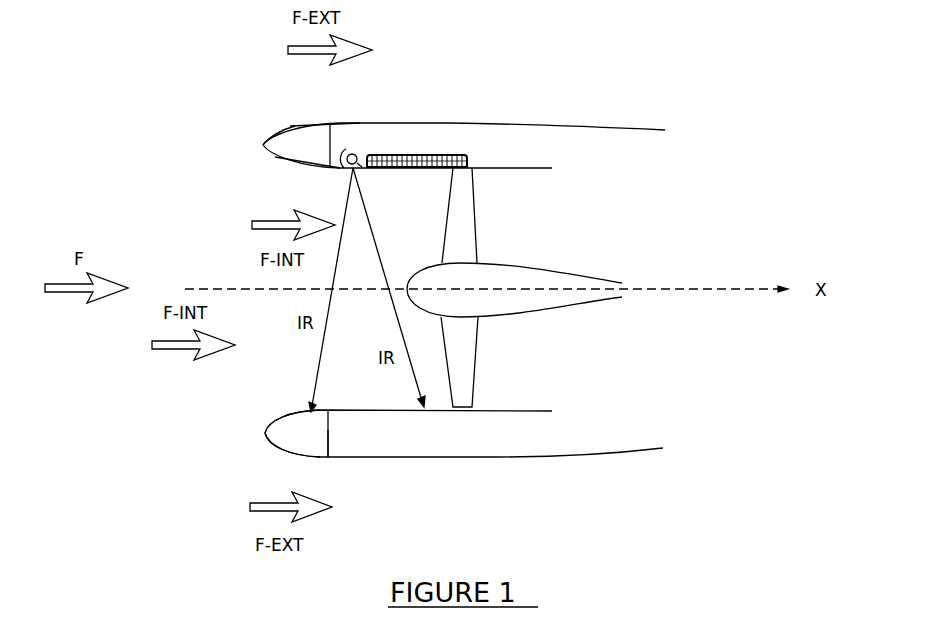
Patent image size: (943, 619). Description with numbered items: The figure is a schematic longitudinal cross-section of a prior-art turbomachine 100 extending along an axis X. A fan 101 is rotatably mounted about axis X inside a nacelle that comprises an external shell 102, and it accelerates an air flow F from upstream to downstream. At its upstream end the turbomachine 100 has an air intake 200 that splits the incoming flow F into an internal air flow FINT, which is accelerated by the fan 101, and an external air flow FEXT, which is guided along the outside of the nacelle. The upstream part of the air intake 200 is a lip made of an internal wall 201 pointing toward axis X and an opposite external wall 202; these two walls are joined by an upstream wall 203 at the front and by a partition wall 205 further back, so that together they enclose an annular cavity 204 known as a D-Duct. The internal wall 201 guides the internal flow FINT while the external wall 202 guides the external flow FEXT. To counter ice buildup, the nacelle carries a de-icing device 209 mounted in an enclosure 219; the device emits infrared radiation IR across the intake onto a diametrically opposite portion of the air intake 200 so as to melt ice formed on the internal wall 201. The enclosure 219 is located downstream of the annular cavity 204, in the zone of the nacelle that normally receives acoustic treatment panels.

The turbomachine 100 is at (686, 189).
The fan 101 is at (425, 271).
The external shell 102 is at (383, 168).
The air intake 200 is at (263, 421).
The internal wall 201 is at (290, 158).
The external wall 202 is at (300, 126).
The upstream wall 203 is at (262, 143).
The annular cavity 204 is at (297, 432).
The partition wall 205 is at (331, 449).
The de-icing device 209 is at (352, 154).
The enclosure 219 is at (362, 166).